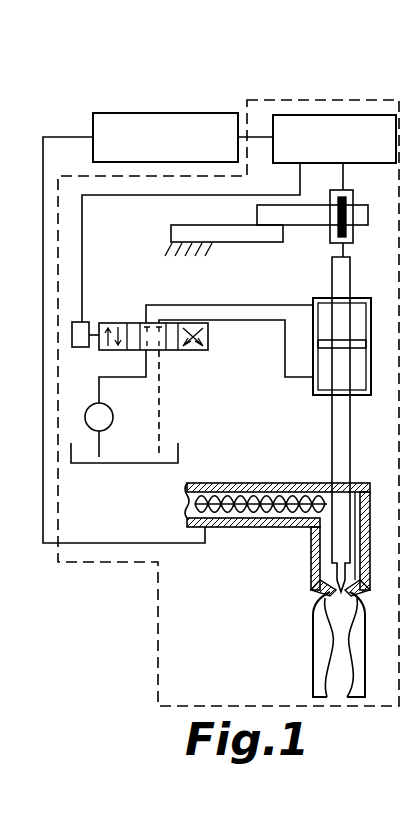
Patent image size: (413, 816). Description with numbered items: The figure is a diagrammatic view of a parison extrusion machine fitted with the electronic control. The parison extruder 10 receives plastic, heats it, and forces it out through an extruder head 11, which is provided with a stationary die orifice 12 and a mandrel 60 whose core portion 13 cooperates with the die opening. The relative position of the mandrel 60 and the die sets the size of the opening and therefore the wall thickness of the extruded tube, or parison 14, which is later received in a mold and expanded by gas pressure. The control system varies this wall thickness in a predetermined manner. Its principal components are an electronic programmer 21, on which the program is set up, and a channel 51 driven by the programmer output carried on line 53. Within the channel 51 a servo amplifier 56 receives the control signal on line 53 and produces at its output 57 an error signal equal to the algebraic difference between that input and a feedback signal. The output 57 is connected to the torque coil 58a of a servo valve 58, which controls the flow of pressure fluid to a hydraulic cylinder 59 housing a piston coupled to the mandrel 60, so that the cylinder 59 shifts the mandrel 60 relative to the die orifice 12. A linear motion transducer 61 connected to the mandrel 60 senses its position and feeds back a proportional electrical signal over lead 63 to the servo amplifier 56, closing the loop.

The parison extruder 10 is at (277, 544).
The extruder head 11 is at (368, 566).
The stationary die orifice 12 is at (356, 612).
The core portion 13 is at (326, 624).
The parison 14 is at (313, 668).
The electronic programmer 21 is at (137, 113).
The channel 51 is at (320, 100).
The line 53 is at (259, 140).
The servo amplifier 56 is at (287, 115).
The output 57 is at (219, 196).
The servo valve 58 is at (189, 356).
The torque coil 58a is at (76, 347).
The hydraulic cylinder 59 is at (300, 387).
The mandrel 60 is at (335, 542).
The linear motion transducer 61 is at (316, 240).
The lead 63 is at (348, 179).